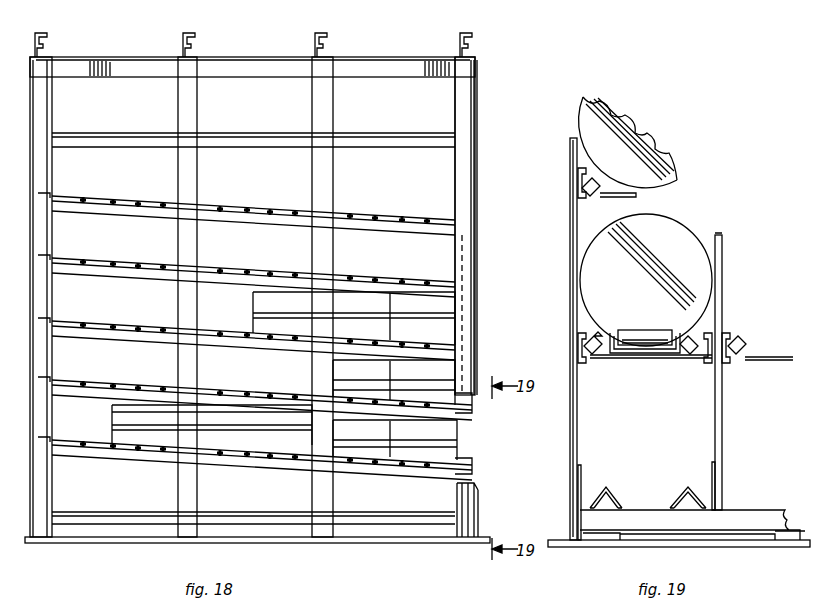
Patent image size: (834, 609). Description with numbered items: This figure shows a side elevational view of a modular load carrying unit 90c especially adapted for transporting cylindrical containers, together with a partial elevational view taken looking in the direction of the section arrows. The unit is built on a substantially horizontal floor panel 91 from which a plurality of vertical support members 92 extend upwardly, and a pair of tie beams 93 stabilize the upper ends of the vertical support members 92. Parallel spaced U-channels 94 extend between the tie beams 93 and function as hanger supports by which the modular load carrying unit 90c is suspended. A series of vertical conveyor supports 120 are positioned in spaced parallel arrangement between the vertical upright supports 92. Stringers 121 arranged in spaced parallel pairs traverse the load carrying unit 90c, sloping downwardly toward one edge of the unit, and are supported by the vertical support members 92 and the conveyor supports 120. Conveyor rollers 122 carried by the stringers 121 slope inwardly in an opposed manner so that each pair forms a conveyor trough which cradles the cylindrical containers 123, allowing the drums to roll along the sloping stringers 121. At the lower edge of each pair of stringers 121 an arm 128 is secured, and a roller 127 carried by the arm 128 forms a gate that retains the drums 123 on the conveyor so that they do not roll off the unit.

In FIG. 18, the modular load carrying unit 90c is at (481, 96).
In FIG. 18, the floor panel 91 is at (362, 546).
In FIG. 18, the vertical support members 92 is at (197, 118).
In FIG. 19, the vertical support members 92 is at (570, 432).
In FIG. 18, the tie beams 93 is at (244, 58).
In FIG. 18, the U-channels 94 is at (196, 41).
In FIG. 19, the vertical conveyor supports 120 is at (722, 416).
In FIG. 18, the stringers 121 is at (128, 216).
In FIG. 19, the stringers 121 is at (575, 187).
In FIG. 19, the conveyor rollers 122 is at (583, 334).
In FIG. 18, the cylindrical containers 123 is at (252, 305).
In FIG. 19, the cylindrical containers 123 is at (673, 232).
In FIG. 19, the roller 127 is at (642, 330).
In FIG. 19, the arm 128 is at (623, 358).